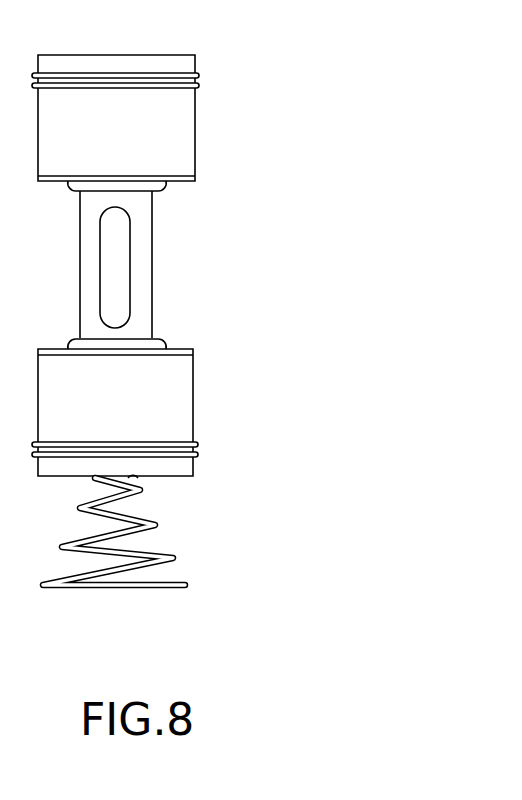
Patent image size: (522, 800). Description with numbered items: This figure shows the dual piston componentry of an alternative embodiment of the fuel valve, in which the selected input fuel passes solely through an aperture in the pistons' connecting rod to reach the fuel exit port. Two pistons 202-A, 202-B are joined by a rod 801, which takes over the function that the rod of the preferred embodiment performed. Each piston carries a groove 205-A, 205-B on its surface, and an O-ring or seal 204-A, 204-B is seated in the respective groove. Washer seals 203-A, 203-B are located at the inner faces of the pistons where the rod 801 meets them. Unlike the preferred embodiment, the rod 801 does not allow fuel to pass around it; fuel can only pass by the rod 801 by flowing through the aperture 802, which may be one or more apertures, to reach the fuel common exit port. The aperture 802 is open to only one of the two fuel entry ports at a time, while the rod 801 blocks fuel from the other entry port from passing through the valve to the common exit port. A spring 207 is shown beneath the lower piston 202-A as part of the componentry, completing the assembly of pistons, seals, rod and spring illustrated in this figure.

The piston 202-B is at (150, 141).
The O-ring or seal 204-B is at (211, 80).
The groove 205-B is at (213, 75).
The washer seal 203-B is at (195, 181).
The rod 801 is at (147, 233).
The aperture 802 is at (115, 283).
The washer seal 203-A is at (193, 350).
The piston 202-A is at (149, 411).
The O-ring or seal 204-A is at (211, 450).
The groove 205-A is at (214, 446).
The spring 207 is at (158, 523).